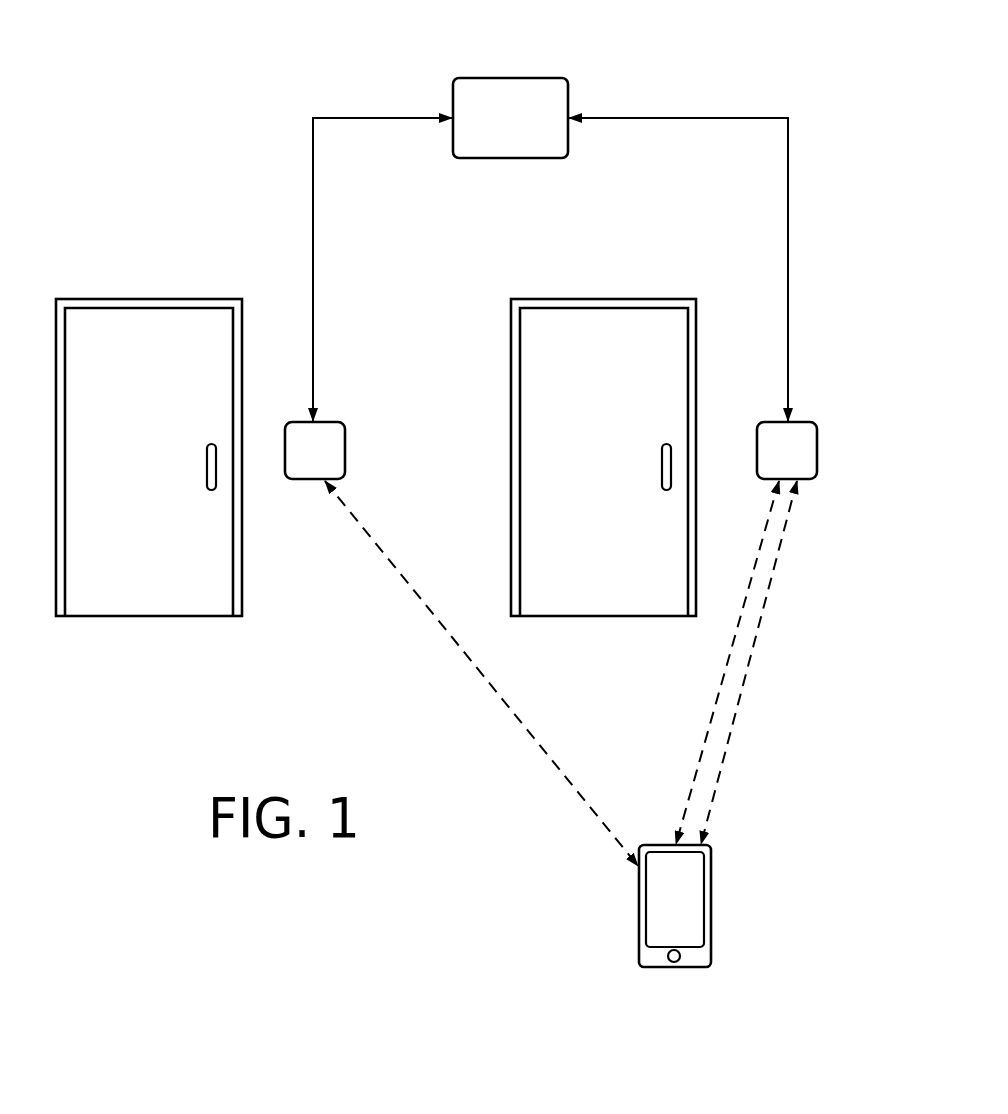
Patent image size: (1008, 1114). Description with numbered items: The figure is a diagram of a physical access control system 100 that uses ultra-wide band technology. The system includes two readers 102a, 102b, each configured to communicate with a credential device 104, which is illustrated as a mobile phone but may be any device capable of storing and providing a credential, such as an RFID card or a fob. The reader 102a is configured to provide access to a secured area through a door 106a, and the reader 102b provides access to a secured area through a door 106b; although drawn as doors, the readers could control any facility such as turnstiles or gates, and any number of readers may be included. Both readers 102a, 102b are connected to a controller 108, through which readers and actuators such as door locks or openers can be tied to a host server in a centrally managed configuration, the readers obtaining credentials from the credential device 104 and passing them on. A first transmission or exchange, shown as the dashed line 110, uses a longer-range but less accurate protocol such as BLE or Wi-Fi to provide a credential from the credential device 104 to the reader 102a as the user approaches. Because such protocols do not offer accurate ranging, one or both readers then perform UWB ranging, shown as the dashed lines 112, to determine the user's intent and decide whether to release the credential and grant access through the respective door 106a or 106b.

The access control system 100 is at (714, 43).
The reader 102a is at (817, 440).
The reader 102b is at (345, 440).
The credential device 104 is at (711, 898).
The door 106a is at (603, 299).
The door 106b is at (143, 299).
The controller 108 is at (550, 80).
The dashed line (first transmission or exchange) 110 is at (748, 668).
The dashed lines (UWB ranging) 112 is at (537, 743).